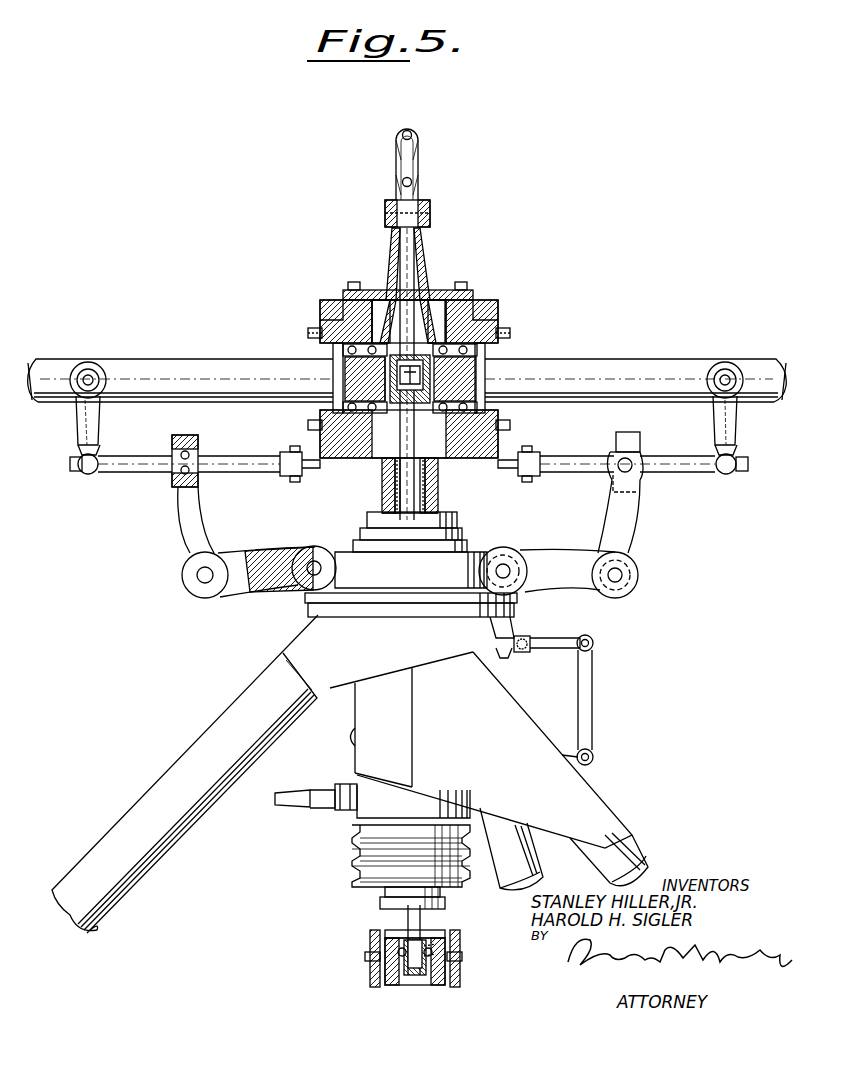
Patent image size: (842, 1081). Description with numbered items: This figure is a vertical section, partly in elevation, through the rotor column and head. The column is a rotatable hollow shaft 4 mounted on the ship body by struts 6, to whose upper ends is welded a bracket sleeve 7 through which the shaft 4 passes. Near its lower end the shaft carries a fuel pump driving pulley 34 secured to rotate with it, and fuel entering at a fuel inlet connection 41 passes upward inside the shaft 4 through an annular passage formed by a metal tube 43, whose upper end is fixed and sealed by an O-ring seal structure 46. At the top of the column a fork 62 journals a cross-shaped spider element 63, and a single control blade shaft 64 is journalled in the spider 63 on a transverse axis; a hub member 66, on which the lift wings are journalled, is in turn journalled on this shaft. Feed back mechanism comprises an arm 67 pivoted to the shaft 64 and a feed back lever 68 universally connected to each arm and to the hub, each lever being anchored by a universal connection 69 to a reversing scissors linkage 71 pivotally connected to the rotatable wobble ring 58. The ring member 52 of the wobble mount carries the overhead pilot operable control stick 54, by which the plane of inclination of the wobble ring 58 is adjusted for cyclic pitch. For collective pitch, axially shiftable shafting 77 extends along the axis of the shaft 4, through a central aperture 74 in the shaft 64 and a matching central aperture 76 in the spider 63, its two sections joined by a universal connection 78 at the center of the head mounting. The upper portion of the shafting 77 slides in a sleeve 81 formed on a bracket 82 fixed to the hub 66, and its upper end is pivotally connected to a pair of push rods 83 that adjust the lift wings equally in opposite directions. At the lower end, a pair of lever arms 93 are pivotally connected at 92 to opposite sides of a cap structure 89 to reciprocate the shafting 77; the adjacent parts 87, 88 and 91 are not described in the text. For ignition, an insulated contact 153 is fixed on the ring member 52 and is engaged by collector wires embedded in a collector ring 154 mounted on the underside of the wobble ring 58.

The hollow shaft 4 is at (440, 492).
The struts 6 is at (322, 185).
The bracket sleeve 7 is at (358, 724).
The fuel pump driving pulley 34 is at (354, 848).
The fuel inlet connection 41 is at (348, 810).
The metal tube 43 is at (400, 492).
The O-ring seal structure 46 is at (402, 457).
The ring member 52 is at (414, 652).
The overhead pilot operable control stick 54 is at (205, 748).
The rotatable pitch control or wobble ring 58 is at (418, 582).
The fork 62 is at (395, 445).
The spider element 63 is at (500, 318).
The control blade shaft 64 is at (217, 365).
The hub member 66 is at (320, 316).
The arm 67 is at (82, 430).
The feed back lever 68 is at (132, 470).
The universal connection 69 is at (200, 448).
The reversing scissors linkage 71 is at (264, 546).
The central aperture 74 is at (384, 386).
The central aperture 76 is at (385, 322).
The axially shiftable shafting 77 is at (410, 283).
The universal connection 78 is at (424, 380).
The sleeve 81 is at (430, 252).
The bracket 82 is at (456, 292).
The push rods 83 is at (430, 208).
The stub shaft 87 is at (415, 977).
The pin 88 is at (430, 950).
The cap structure 89 is at (393, 933).
The bearing housing 91 is at (393, 982).
The pivotal connection 92 is at (368, 959).
The lever arms 93 is at (372, 942).
The insulated contact 153 is at (516, 620).
The collector ring 154 is at (302, 616).